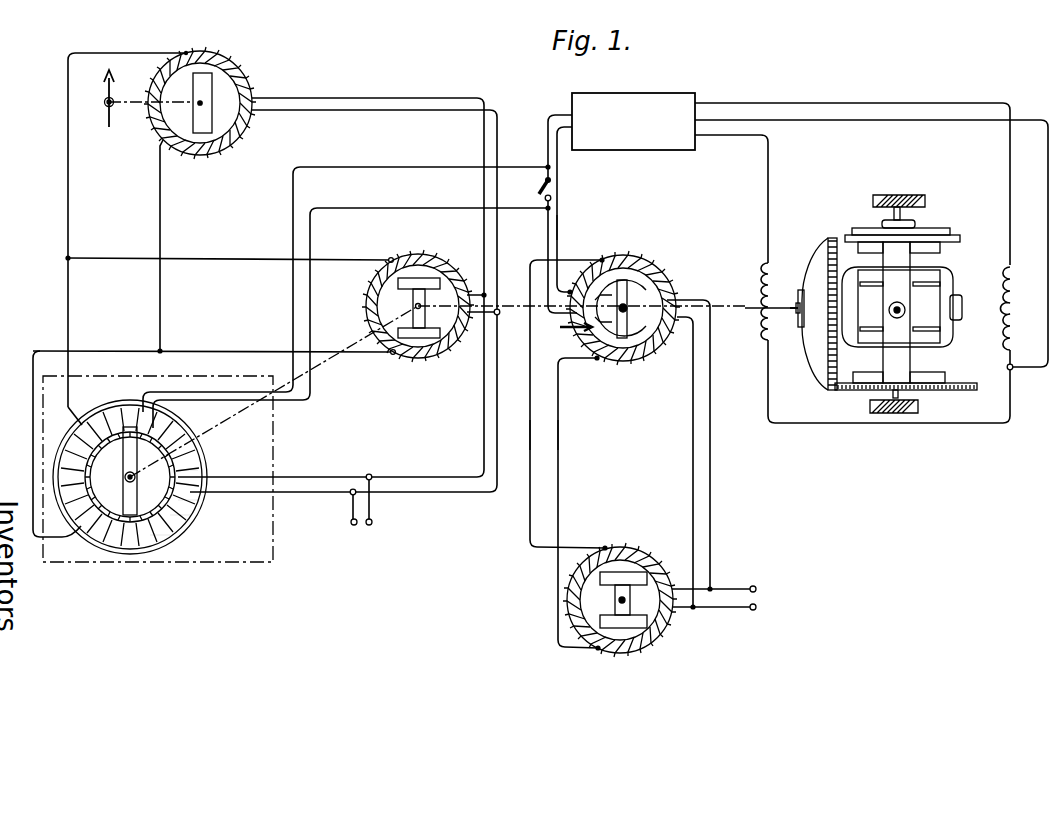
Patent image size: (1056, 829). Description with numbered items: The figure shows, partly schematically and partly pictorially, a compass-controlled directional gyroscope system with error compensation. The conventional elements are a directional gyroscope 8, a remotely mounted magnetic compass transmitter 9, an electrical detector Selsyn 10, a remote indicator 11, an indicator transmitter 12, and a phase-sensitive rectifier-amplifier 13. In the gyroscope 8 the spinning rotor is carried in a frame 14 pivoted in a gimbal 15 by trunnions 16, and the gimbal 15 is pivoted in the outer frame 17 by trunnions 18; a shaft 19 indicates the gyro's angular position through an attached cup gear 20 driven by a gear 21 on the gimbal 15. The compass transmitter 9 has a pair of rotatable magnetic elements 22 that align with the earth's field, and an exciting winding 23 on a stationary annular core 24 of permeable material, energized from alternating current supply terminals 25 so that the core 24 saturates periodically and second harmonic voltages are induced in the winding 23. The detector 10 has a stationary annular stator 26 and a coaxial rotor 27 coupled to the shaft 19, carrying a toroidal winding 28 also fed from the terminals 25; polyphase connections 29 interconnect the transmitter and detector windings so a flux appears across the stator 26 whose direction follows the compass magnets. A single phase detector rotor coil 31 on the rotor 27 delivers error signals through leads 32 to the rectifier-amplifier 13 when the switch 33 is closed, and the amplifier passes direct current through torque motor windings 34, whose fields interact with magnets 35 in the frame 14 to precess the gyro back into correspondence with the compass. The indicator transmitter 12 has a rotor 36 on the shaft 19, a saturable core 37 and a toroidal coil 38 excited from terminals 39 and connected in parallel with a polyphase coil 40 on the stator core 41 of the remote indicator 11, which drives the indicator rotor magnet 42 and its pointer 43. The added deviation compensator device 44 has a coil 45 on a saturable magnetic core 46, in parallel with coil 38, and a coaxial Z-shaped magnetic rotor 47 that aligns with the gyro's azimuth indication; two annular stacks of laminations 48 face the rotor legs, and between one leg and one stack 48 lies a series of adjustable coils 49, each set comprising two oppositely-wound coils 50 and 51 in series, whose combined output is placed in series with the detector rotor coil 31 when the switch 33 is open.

The directional gyroscope 8 is at (879, 297).
The magnetic compass transmitter 9 is at (627, 598).
The electrical detector Selsyn 10 is at (626, 306).
The remote indicator 11 is at (209, 107).
The indicator transmitter 12 is at (418, 309).
The phase-sensitive rectifier-amplifier 13 is at (648, 92).
The frame 14 is at (940, 268).
The gimbal 15 is at (882, 258).
The trunnions 16 is at (897, 320).
The outer frame 17 is at (918, 408).
The trunnions 18 is at (905, 392).
The shaft 19 is at (793, 302).
The cup gear 20 is at (815, 375).
The gear 21 is at (832, 392).
The rotatable magnetic elements 22 is at (613, 600).
The exciting winding 23 is at (623, 548).
The stationary annular core 24 is at (615, 645).
The supply terminals 25 is at (758, 591).
The stationary annular stator 26 is at (670, 290).
The rotor 27 is at (620, 355).
The toroidal winding 28 is at (617, 258).
The polyphase connections 29 is at (556, 448).
The detector rotor coil 31 is at (567, 326).
The leads 32 is at (555, 222).
The switch 33 is at (538, 188).
The torque motor windings 34 is at (1018, 285).
The magnets 35 is at (922, 290).
The rotor 36 is at (406, 305).
The saturable core 37 is at (410, 258).
The toroidal coil 38 is at (410, 357).
The terminals 39 is at (356, 525).
The polyphase coil 40 is at (224, 150).
The stator core 41 is at (238, 66).
The indicator rotor magnet 42 is at (192, 110).
The pointer 43 is at (105, 91).
The deviation compensator device 44 is at (158, 487).
The coil 45 is at (165, 428).
The saturable magnetic core 46 is at (180, 450).
The Z-shaped magnetic rotor 47 is at (137, 470).
The annular stacks of laminations 48 is at (190, 520).
The adjustable coils 49 is at (160, 532).
The coil 50 is at (192, 508).
The coil 51 is at (193, 497).